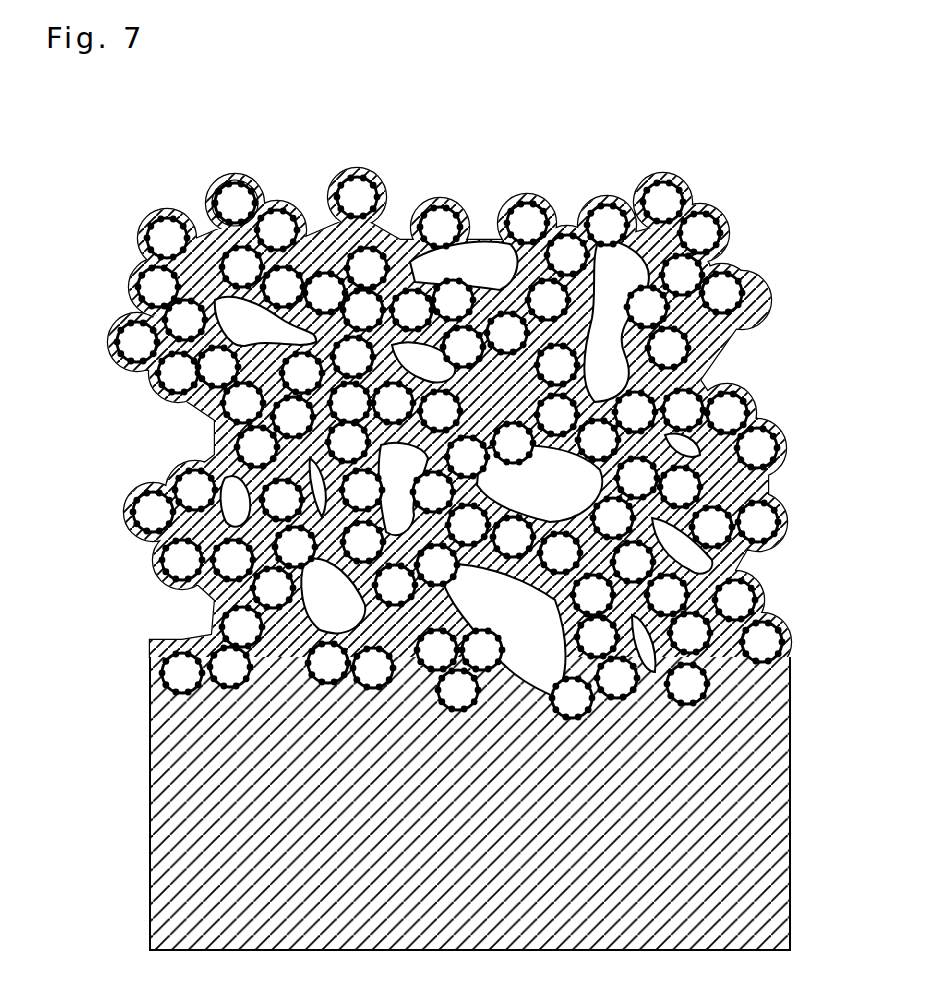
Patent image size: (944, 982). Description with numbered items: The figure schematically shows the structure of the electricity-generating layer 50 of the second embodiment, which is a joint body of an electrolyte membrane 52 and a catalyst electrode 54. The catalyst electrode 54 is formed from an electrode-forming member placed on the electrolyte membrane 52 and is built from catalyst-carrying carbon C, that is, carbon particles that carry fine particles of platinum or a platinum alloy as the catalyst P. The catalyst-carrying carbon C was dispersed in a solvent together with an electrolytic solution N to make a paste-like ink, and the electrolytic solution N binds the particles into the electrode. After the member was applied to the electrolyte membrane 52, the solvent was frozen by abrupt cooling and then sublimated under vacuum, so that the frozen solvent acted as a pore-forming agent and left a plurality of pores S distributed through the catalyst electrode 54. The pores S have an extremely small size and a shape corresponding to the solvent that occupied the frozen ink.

The electricity-generating layer 50 is at (733, 153).
The electrolyte membrane 52 is at (791, 786).
The catalyst electrode 54 is at (493, 530).
The catalyst P is at (236, 200).
The catalyst-carrying carbon C is at (240, 200).
The electrolytic solution N is at (350, 182).
The pores S is at (598, 283).